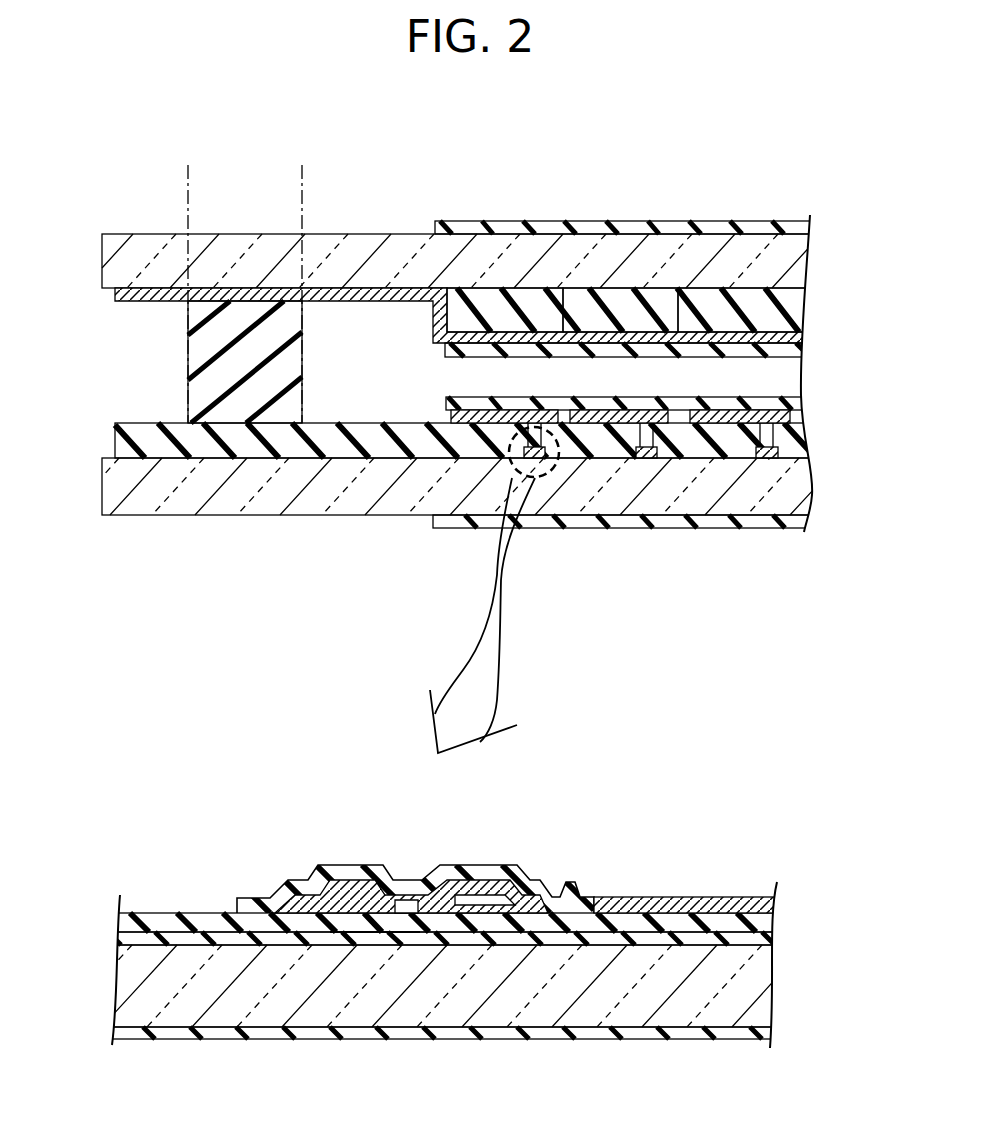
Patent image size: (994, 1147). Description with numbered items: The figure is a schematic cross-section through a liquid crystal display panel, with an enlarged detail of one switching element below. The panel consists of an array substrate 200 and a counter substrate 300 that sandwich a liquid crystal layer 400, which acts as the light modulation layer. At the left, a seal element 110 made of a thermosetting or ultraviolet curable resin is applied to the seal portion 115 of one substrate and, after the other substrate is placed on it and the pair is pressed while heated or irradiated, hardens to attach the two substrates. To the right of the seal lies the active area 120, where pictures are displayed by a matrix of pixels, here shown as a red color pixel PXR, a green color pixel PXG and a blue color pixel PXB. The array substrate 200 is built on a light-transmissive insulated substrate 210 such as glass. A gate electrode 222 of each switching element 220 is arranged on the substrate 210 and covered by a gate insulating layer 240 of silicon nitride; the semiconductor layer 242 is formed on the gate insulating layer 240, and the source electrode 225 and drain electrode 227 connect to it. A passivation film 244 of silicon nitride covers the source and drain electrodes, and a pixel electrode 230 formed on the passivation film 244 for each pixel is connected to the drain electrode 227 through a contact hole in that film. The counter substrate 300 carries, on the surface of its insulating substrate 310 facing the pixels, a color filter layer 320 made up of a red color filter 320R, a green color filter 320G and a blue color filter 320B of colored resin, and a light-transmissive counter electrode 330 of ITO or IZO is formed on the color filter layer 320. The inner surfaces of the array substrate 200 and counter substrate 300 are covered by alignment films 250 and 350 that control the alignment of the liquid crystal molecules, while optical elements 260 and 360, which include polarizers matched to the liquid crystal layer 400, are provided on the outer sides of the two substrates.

The seal portion 115 is at (188, 163).
The active area 120 is at (472, 150).
The seal element 110 is at (188, 385).
The counter substrate 300 is at (470, 293).
The insulating substrate 310 is at (118, 265).
The color filter layer 320 is at (666, 329).
The red color filter 320R is at (503, 318).
The green color filter 320G is at (618, 318).
The blue color filter 320B is at (728, 318).
The counter electrode 330 is at (805, 338).
The alignment film 350 is at (800, 350).
The optical element 360 is at (800, 228).
The liquid crystal layer 400 is at (780, 380).
The array substrate 200 is at (470, 741).
The insulated substrate 210 is at (118, 496).
The switching element 220 is at (538, 452).
The gate electrode 222 is at (392, 925).
The source electrode 225 is at (332, 896).
The drain electrode 227 is at (490, 888).
The pixel electrode 230 is at (478, 420).
The gate insulating layer 240 is at (765, 938).
The semiconductor layer 242 is at (407, 905).
The passivation film 244 is at (795, 440).
The alignment film 250 is at (775, 405).
The optical element 260 is at (800, 521).
The red color pixel PXR is at (556, 208).
The green color pixel PXG is at (565, 208).
The blue color pixel PXB is at (688, 208).